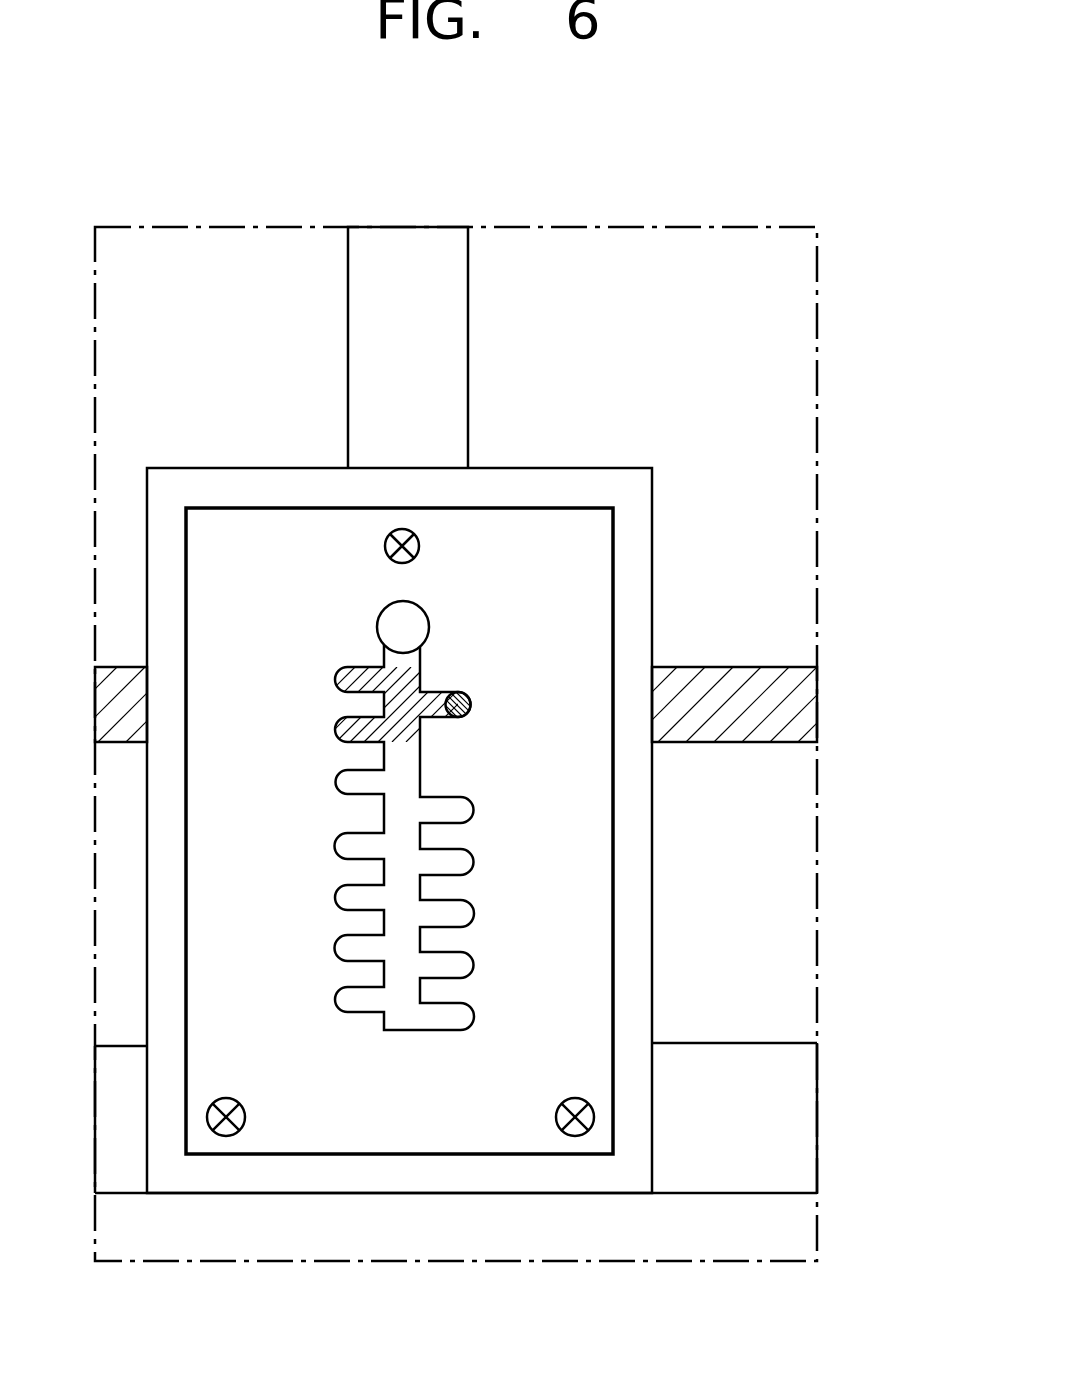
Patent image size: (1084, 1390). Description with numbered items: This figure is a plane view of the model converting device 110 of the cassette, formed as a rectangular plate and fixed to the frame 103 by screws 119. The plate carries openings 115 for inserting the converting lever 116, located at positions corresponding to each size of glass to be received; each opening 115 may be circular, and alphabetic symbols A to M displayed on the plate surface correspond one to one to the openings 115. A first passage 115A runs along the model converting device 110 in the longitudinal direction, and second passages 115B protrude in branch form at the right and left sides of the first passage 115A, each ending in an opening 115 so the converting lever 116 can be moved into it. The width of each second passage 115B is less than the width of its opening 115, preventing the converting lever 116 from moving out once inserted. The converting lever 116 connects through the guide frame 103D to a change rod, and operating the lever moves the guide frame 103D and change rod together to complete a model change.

The frame 103 is at (786, 1135).
The guide frame 103D is at (782, 705).
The model converting device 110 is at (405, 1130).
The opening 115 is at (590, 971).
The first passage 115A is at (400, 962).
The second passage 115B is at (440, 1018).
The converting lever 116 is at (462, 716).
The screw 119 is at (412, 546).